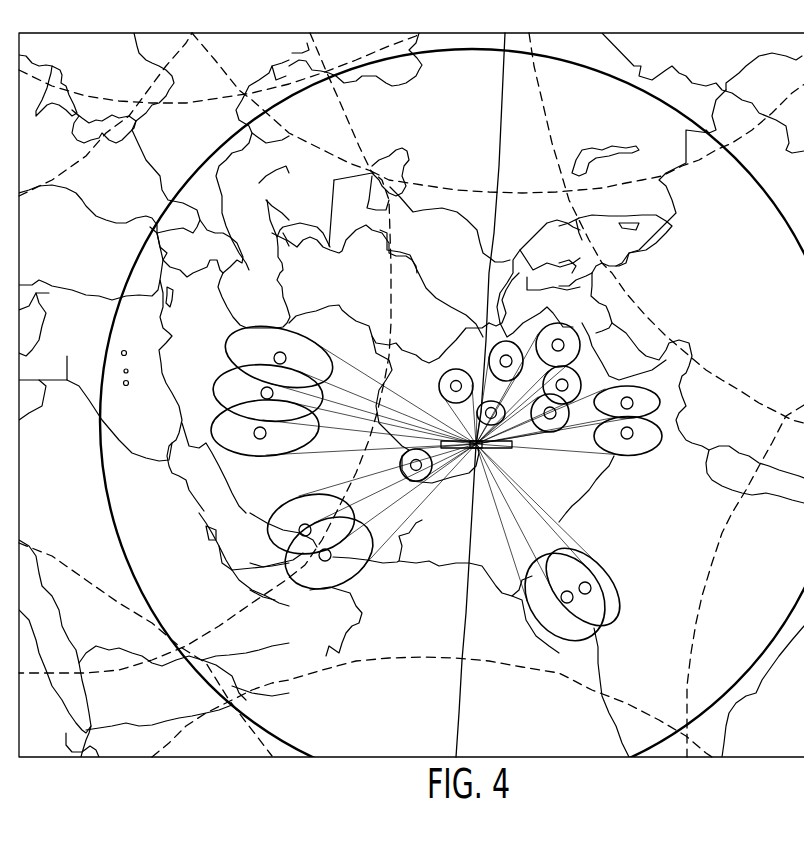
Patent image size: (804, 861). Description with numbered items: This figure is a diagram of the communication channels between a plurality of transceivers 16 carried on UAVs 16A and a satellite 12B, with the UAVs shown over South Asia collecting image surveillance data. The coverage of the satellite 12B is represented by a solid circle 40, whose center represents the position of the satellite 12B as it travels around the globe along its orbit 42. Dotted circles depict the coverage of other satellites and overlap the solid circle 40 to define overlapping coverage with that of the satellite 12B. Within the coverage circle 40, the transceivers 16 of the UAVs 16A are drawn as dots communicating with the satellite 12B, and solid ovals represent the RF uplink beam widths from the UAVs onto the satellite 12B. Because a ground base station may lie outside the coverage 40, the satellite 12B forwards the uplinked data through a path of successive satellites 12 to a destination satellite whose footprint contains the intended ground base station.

The satellites 12 is at (466, 449).
The satellite 12B is at (478, 450).
The transceivers 16 is at (627, 440).
The UAVs 16A is at (660, 400).
The solid circle 40 is at (168, 660).
The orbit 42 is at (462, 716).